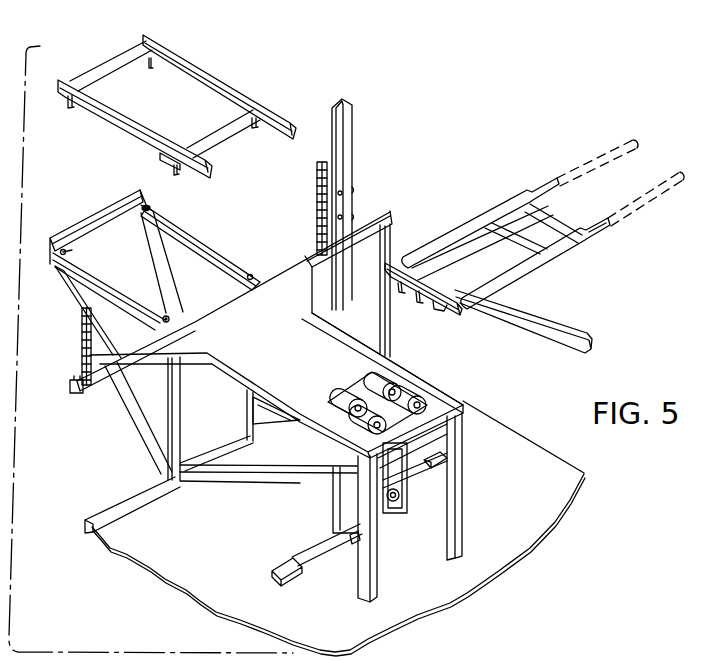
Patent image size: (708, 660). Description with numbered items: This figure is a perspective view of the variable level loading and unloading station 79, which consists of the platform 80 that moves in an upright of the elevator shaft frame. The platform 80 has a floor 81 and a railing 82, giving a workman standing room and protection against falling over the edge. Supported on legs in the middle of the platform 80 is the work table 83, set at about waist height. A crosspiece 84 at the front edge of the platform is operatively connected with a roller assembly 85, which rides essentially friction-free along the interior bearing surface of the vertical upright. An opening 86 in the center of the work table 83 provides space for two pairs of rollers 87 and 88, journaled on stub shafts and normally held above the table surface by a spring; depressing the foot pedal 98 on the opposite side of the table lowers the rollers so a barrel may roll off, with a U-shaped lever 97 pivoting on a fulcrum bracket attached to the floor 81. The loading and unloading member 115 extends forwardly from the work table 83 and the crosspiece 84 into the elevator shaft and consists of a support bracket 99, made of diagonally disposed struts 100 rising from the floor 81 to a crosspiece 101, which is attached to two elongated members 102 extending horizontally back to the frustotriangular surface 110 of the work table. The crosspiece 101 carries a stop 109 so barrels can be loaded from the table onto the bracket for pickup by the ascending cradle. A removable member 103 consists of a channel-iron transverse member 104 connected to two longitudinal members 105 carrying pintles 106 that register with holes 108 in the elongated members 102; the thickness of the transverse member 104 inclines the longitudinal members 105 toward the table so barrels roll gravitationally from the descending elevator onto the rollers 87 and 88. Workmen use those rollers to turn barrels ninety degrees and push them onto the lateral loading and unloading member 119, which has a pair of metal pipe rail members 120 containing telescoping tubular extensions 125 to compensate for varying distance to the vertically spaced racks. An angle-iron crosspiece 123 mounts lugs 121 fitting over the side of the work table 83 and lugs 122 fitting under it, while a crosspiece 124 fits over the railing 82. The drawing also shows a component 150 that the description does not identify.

The variable level loading and unloading station 79 is at (534, 242).
The platform 80 is at (371, 412).
The floor 81 is at (218, 545).
The railing 82 is at (547, 330).
The work table 83 is at (353, 390).
The crosspiece 84 is at (110, 382).
The roller assembly 85 is at (350, 138).
The opening 86 is at (427, 388).
The rollers 87 is at (375, 375).
The rollers 88 is at (338, 397).
The U-shaped lever 97 is at (328, 503).
The foot pedal 98 is at (440, 463).
The support bracket 99 is at (149, 260).
The diagonally disposed struts 100 is at (75, 298).
The crosspiece 101 is at (147, 208).
The elongated members 102 is at (213, 252).
The removable member 103 is at (190, 101).
The transverse member 104 is at (103, 63).
The longitudinal members 105 is at (263, 108).
The pintles 106 is at (230, 112).
The holes 108 is at (78, 252).
The stop 109 is at (73, 226).
The frustotriangular surface 110 is at (222, 318).
The loading and unloading member 115 is at (214, 224).
The lateral loading and unloading member 119 is at (534, 247).
The rail members 120 is at (543, 265).
The lugs 121 is at (440, 312).
The lugs 122 is at (422, 304).
The crosspiece 123 is at (457, 263).
The crosspiece 124 is at (533, 223).
The tubular extensions 125 is at (612, 224).
The rack strip 150 is at (317, 190).